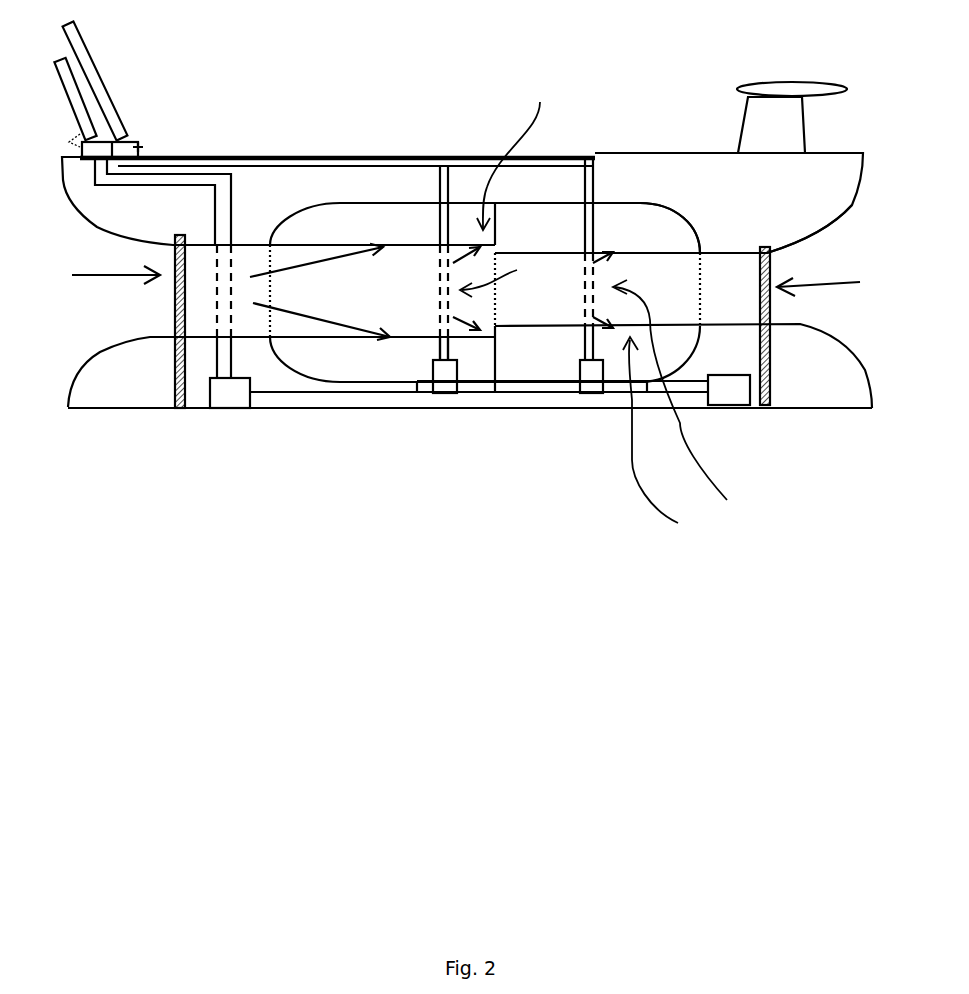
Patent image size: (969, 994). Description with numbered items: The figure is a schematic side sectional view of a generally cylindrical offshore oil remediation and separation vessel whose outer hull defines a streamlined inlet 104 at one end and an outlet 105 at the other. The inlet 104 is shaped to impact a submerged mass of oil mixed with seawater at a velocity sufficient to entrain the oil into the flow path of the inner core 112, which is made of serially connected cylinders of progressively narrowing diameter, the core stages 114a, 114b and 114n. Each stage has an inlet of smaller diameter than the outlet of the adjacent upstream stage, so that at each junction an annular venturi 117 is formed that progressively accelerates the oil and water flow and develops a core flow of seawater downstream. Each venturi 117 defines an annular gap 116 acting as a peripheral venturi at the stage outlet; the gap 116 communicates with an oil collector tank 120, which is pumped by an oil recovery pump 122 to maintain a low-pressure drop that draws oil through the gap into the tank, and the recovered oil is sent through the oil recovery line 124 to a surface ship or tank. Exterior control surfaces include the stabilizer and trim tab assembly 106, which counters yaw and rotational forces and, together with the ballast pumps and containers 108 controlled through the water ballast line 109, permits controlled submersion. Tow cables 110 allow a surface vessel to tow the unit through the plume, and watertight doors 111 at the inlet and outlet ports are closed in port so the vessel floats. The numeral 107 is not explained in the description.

The inlet 104 is at (90, 276).
The outlet 105 is at (844, 279).
The stabilizer and trim tab assembly 106 is at (793, 70).
The valve 107 is at (243, 262).
The ballast pumps and containers 108 is at (688, 422).
The water ballast line 109 is at (90, 107).
The tow cables 110 is at (83, 135).
The watertight doors 111 is at (827, 420).
The inner core 112 is at (387, 292).
The core stage 114a is at (430, 342).
The core stage 114b is at (650, 253).
The core stage 114n is at (728, 253).
The annular gap 116 is at (588, 313).
The venturi 117 is at (613, 388).
The oil collector tank 120 is at (522, 202).
The oil recovery pump 122 is at (445, 380).
The oil recovery line 124 is at (95, 73).